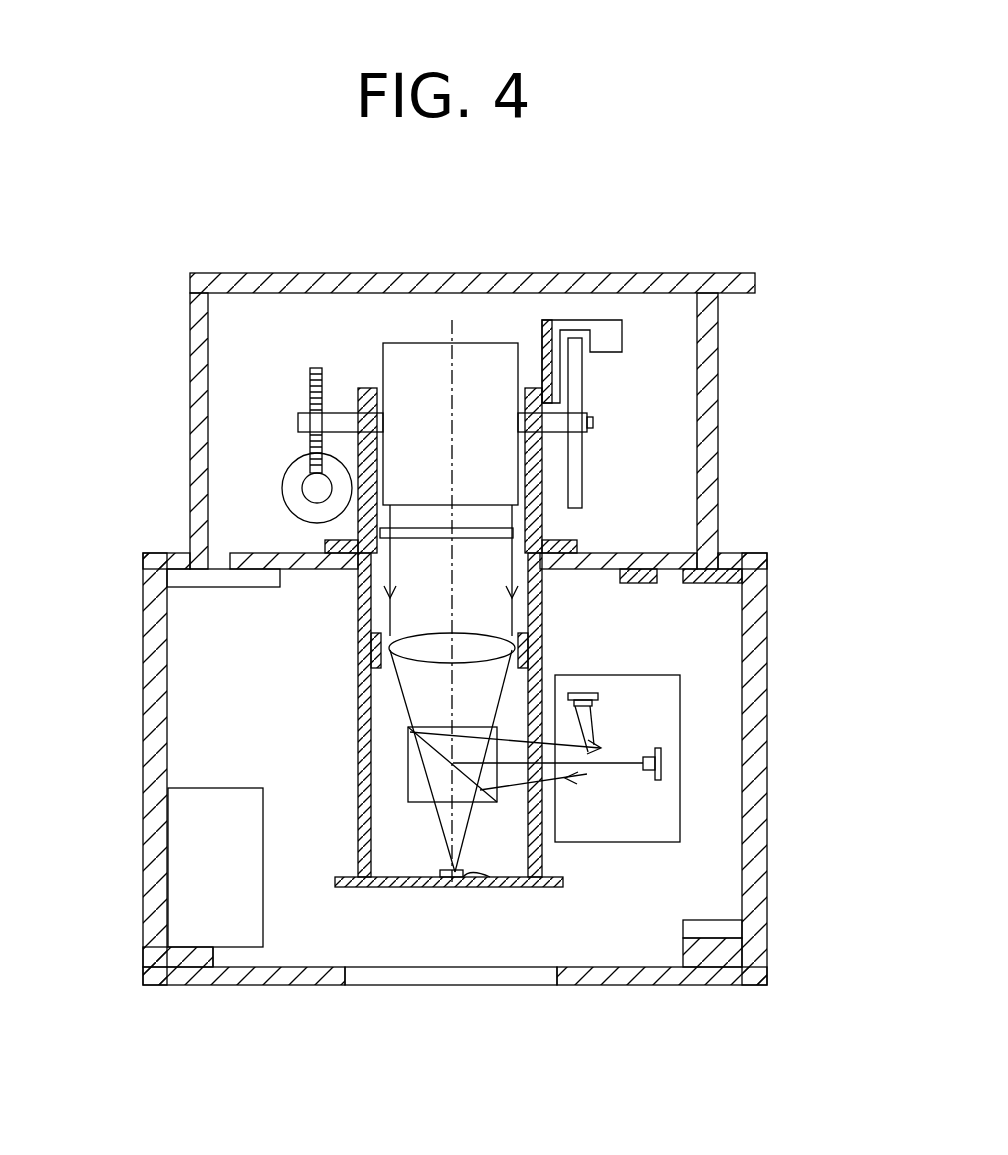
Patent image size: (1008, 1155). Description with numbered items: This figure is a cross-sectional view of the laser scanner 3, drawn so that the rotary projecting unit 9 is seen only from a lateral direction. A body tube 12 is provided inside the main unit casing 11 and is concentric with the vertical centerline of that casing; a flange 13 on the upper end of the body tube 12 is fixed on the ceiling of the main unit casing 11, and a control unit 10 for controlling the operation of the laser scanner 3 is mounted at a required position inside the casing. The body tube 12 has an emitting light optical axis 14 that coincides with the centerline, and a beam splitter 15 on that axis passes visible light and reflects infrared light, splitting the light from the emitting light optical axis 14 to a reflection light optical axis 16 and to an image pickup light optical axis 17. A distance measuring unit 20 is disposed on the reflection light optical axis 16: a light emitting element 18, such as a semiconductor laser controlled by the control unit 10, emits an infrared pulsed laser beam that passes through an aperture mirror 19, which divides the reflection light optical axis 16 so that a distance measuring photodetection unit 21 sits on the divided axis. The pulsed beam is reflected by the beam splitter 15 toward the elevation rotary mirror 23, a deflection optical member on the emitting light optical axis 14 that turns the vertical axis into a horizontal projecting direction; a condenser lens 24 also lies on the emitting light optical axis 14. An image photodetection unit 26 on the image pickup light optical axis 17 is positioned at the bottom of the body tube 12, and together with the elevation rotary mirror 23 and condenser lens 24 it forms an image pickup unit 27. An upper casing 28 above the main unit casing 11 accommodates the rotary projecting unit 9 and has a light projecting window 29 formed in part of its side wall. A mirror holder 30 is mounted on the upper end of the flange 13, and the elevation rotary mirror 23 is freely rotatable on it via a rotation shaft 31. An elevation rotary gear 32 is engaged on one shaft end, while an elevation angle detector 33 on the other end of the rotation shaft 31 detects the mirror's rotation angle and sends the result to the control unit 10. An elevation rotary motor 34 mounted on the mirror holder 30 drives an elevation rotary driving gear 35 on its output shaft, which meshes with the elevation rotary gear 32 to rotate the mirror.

The laser scanner 3 is at (452, 573).
The rotary projecting unit 9 is at (366, 340).
The control unit 10 is at (213, 788).
The main unit casing 11 is at (768, 860).
The body tube 12 is at (360, 694).
The flange 13 is at (287, 560).
The emitting light optical axis 14 is at (450, 627).
The beam splitter 15 is at (408, 729).
The reflection light optical axis 16 is at (626, 762).
The image pickup light optical axis 17 is at (450, 808).
The light emitting element 18 is at (658, 768).
The aperture mirror 19 is at (563, 780).
The distance measuring unit 20 is at (684, 716).
The distance measuring photodetection unit 21 is at (577, 693).
The elevation rotary mirror 23 is at (422, 343).
The condenser lens 24 is at (393, 641).
The image photodetection unit 26 is at (490, 880).
The image pickup unit 27 is at (428, 852).
The upper casing 28 is at (188, 372).
The light projecting window 29 is at (720, 372).
The mirror holder 30 is at (545, 525).
The rotation shaft 31 is at (595, 423).
The elevation rotary gear 32 is at (313, 368).
The elevation angle detector 33 is at (615, 388).
The elevation rotary motor 34 is at (284, 484).
The elevation rotary driving gear 35 is at (301, 480).